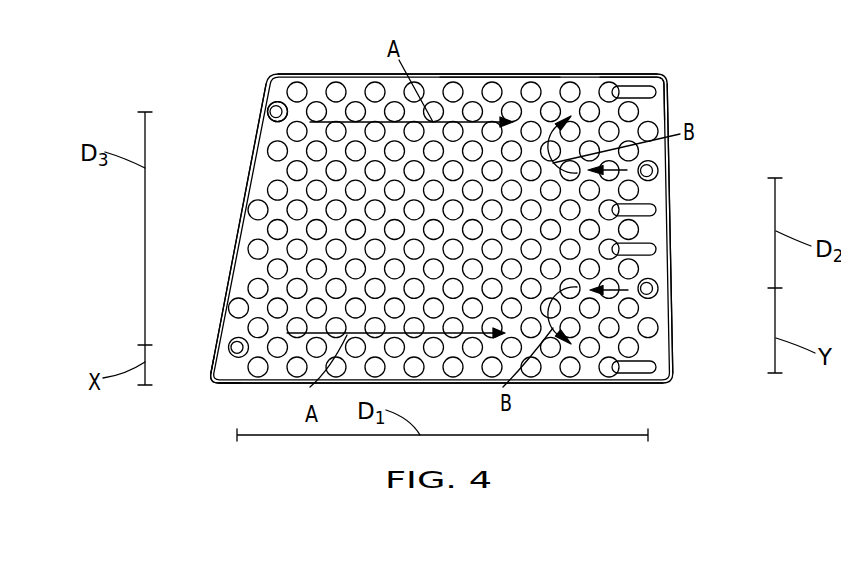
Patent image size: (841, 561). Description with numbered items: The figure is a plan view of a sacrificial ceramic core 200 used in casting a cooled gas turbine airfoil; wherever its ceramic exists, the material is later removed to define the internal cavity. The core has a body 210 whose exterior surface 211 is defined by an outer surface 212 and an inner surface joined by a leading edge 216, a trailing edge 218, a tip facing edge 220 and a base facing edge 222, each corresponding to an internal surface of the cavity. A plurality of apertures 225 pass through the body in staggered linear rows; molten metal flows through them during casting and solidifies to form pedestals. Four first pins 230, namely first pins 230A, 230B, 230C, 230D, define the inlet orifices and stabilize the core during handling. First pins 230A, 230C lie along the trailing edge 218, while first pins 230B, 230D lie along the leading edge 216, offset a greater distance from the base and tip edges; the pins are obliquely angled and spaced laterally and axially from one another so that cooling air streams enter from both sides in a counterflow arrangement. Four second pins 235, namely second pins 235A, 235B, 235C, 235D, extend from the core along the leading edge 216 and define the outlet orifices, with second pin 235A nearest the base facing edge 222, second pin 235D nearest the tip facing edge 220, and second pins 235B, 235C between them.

The sacrificial ceramic core 200 is at (265, 178).
The body 210 is at (660, 110).
The exterior surface 211 is at (212, 378).
The outer surface 212 is at (511, 86).
The leading edge 216 is at (670, 230).
The trailing edge 218 is at (231, 262).
The tip facing edge 220 is at (353, 75).
The base facing edge 222 is at (400, 385).
The apertures 225 is at (609, 86).
The first pins 230 is at (229, 343).
The first pin 230A is at (207, 345).
The first pin 230B is at (660, 291).
The first pin 230C is at (268, 108).
The first pin 230D is at (661, 170).
The second pins 235 is at (633, 380).
The second pin 235A is at (634, 367).
The second pin 235B is at (655, 252).
The second pin 235C is at (660, 207).
The second pin 235D is at (632, 86).